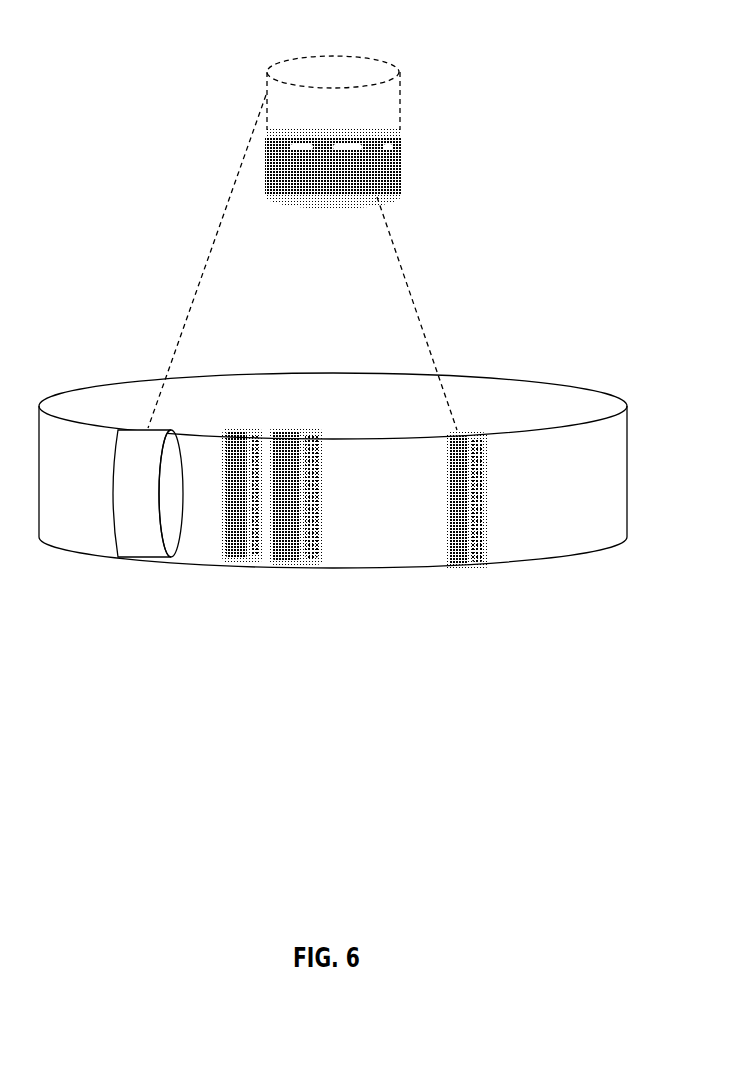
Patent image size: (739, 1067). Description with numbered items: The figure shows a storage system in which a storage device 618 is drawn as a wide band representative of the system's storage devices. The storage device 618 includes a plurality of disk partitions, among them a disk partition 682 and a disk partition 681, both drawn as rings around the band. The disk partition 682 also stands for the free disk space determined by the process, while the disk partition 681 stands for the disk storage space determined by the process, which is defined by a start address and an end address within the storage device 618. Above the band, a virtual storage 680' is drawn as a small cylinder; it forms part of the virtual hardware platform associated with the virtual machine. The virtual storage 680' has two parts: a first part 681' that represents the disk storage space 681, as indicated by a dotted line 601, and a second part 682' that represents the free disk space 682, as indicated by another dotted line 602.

The storage device 618 is at (333, 470).
The disk partition 682 is at (137, 541).
The disk partition 681 is at (478, 546).
The virtual storage 680' is at (333, 109).
The second part 682' is at (333, 93).
The first part 681' is at (333, 168).
The dotted line 601 is at (419, 313).
The dotted line 602 is at (207, 261).